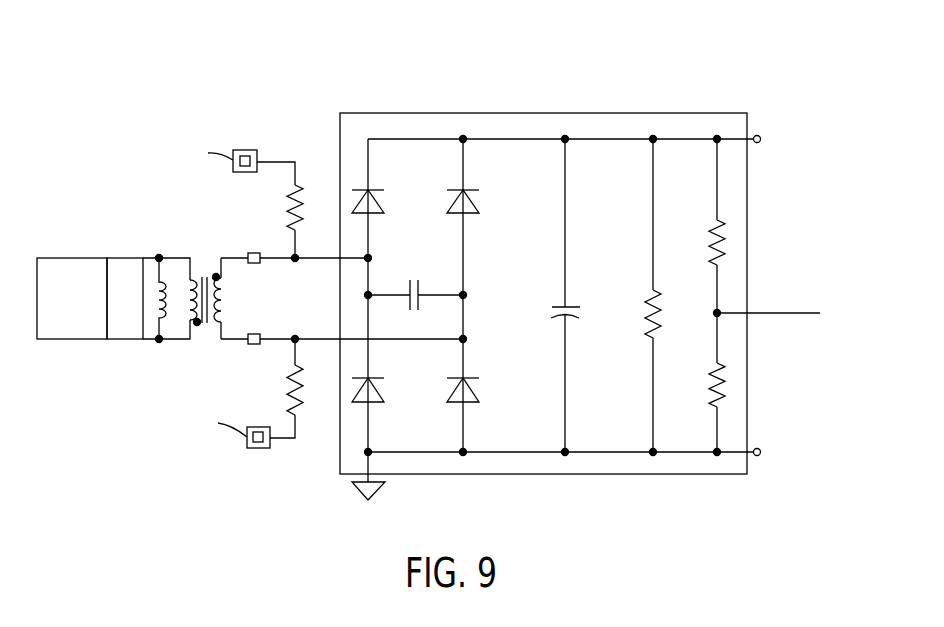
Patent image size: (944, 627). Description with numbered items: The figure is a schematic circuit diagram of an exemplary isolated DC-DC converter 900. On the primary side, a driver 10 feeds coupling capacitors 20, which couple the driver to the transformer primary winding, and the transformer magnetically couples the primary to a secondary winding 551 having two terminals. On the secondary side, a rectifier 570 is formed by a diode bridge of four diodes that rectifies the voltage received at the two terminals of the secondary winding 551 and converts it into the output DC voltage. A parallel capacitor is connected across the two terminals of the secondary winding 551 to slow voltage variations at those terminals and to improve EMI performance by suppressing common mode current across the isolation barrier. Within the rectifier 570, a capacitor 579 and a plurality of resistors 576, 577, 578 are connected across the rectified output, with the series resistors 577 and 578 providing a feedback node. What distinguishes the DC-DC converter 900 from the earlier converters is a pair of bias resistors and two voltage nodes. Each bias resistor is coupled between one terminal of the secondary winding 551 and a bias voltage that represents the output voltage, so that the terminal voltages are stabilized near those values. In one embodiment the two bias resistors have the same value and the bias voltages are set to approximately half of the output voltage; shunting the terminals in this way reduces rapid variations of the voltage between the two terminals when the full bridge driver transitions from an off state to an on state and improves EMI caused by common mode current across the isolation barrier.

The driver 10 is at (75, 330).
The coupling capacitors 20 is at (125, 328).
The secondary winding 551 is at (219, 325).
The rectifier 570 is at (580, 316).
The resistor 576 is at (652, 295).
The resistor 577 is at (713, 220).
The resistor 578 is at (713, 365).
The capacitor 579 is at (557, 303).
The isolated DC-DC converter 900 is at (612, 73).